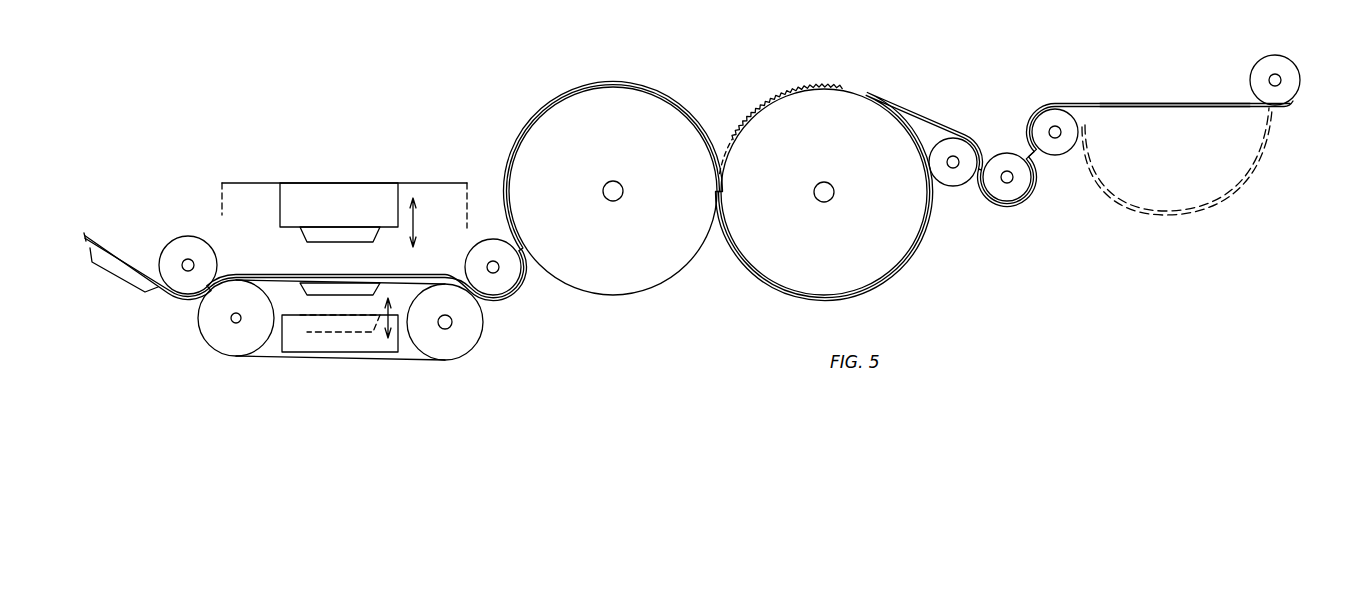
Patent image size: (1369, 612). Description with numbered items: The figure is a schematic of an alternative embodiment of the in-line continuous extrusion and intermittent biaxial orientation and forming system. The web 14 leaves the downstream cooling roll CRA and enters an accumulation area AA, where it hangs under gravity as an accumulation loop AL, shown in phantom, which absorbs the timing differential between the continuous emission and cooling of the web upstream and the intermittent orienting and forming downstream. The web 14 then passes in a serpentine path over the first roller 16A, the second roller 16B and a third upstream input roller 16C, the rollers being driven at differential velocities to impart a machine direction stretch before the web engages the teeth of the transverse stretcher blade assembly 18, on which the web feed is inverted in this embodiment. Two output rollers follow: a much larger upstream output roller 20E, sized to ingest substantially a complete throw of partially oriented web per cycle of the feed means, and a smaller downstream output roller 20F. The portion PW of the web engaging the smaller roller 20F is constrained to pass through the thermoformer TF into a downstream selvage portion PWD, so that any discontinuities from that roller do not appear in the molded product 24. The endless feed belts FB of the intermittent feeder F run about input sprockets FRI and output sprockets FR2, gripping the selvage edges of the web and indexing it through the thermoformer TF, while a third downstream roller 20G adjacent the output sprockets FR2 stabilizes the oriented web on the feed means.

The portion of oriented web PW is at (538, 281).
The molded product 24 is at (136, 296).
The third downstream roller 20G is at (168, 249).
The downstream selvage portion PWD is at (295, 262).
The thermoformer TF is at (340, 216).
The intermittent feeder F is at (325, 368).
The output sprockets FR2 is at (223, 350).
The input sprockets FRI is at (462, 347).
The endless feed belts FB is at (380, 357).
The downstream output roller 20F is at (495, 247).
The upstream output roller 20E is at (684, 237).
The transverse stretcher blade assembly 18 is at (892, 232).
The third upstream input roller 16C is at (955, 175).
The second roller 16B is at (1003, 160).
The first roller 16A is at (1057, 148).
The web 14 is at (1167, 103).
The downstream cooling roll CRA is at (1268, 65).
The accumulation loop AL is at (1205, 213).
The accumulation area AA is at (1184, 169).